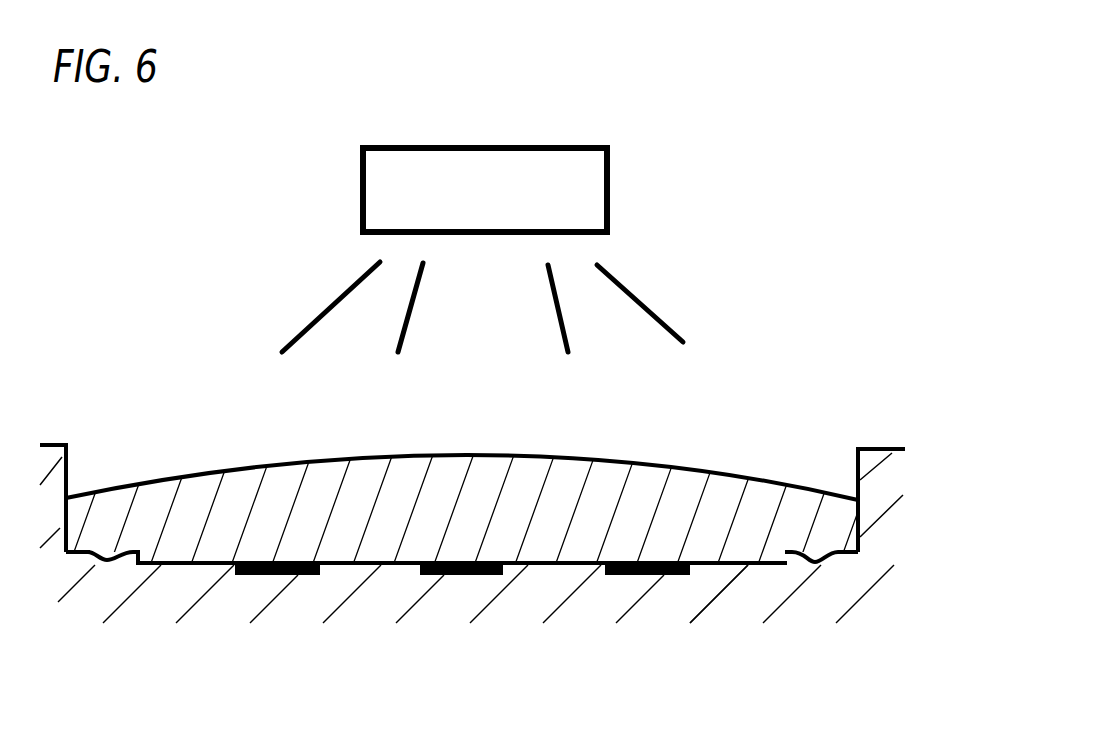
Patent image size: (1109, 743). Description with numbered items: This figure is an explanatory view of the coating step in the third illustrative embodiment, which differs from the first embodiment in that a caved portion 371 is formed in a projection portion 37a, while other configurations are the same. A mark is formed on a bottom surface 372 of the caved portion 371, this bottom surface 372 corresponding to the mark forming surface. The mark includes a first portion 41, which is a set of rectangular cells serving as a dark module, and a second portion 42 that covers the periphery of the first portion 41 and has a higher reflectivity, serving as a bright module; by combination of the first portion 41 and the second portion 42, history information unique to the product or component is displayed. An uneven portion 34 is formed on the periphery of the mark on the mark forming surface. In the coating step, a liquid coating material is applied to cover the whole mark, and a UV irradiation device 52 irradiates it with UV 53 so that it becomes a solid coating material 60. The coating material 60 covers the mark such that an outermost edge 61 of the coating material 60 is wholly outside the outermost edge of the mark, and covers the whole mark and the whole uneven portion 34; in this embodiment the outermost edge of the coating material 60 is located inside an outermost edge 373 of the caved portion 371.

The UV irradiation device 52 is at (610, 202).
The UV 53 is at (628, 287).
The coating material 60 is at (453, 482).
The first portion 41 is at (634, 563).
The second portion 42 is at (353, 563).
The uneven portion 34 is at (108, 558).
The caved portion 371 is at (70, 494).
The bottom surface 372 is at (150, 561).
The outermost edge of the caved portion 373 is at (66, 446).
The outermost edge of the coating material 61 is at (476, 617).
The projection portion 37a is at (665, 610).